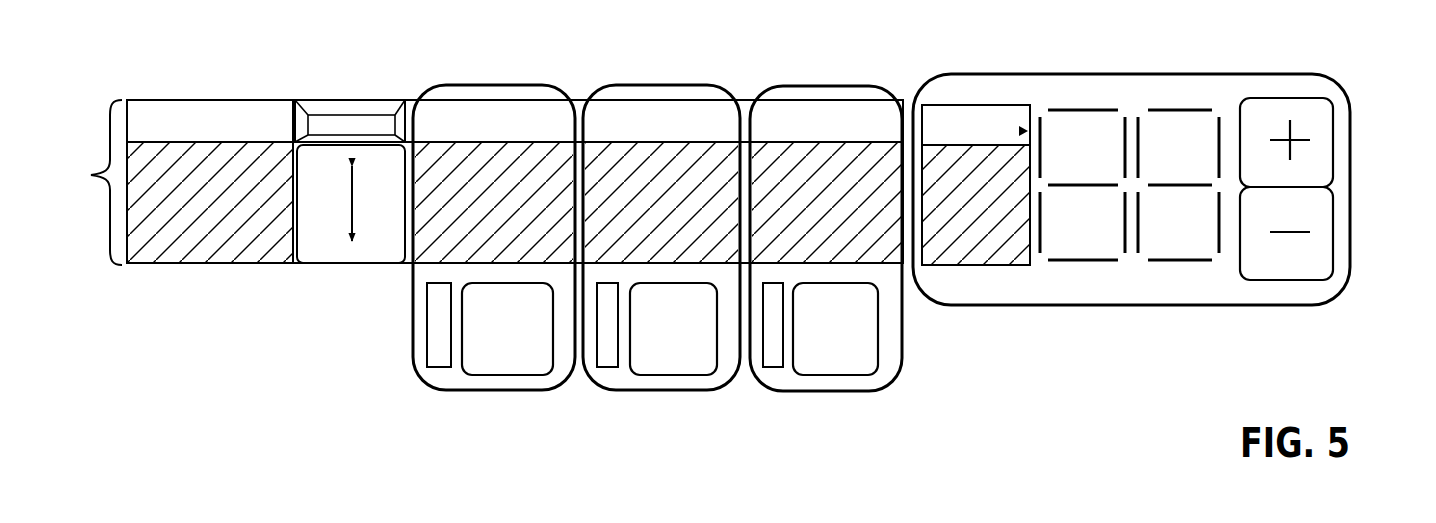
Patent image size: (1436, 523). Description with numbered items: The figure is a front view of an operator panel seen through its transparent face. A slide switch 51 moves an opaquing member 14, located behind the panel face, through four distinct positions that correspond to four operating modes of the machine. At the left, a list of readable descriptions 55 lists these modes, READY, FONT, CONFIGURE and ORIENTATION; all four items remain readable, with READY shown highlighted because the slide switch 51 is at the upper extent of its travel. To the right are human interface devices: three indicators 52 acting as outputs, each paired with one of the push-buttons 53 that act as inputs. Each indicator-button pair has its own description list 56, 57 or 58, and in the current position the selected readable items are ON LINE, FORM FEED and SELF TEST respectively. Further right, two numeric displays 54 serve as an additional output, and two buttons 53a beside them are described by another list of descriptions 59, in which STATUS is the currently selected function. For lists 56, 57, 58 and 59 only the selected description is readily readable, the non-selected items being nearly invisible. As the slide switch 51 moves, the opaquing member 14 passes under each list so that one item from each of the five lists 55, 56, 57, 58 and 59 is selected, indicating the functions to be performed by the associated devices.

The opaquing member 14 is at (217, 96).
The slide switch 51 is at (325, 127).
The indicators 52 is at (438, 344).
The push-buttons 53 is at (497, 350).
The buttons 53a is at (1335, 252).
The numeric displays 54 is at (1087, 273).
The list of readable descriptions 55 is at (92, 172).
The description list 56 is at (490, 80).
The description list 57 is at (667, 80).
The description list 58 is at (811, 82).
The list of descriptions 59 is at (953, 99).